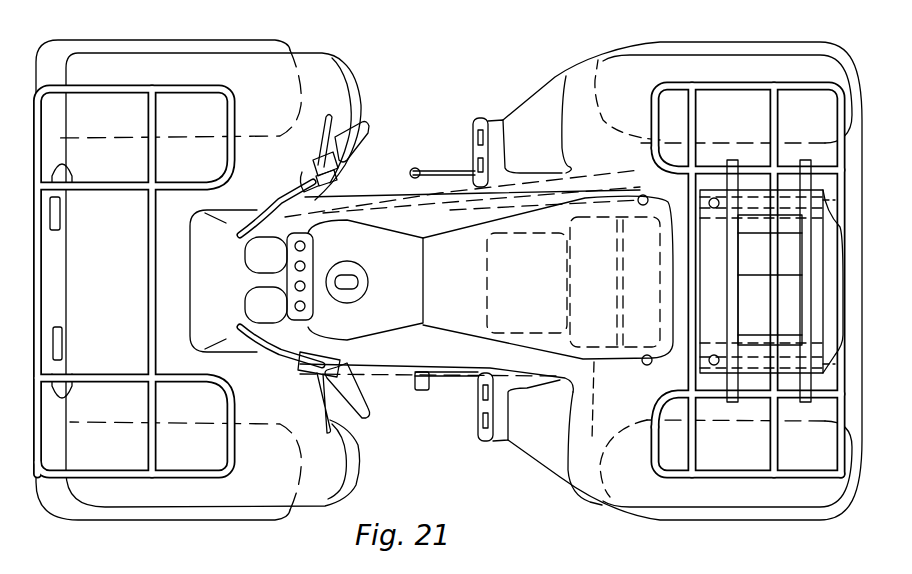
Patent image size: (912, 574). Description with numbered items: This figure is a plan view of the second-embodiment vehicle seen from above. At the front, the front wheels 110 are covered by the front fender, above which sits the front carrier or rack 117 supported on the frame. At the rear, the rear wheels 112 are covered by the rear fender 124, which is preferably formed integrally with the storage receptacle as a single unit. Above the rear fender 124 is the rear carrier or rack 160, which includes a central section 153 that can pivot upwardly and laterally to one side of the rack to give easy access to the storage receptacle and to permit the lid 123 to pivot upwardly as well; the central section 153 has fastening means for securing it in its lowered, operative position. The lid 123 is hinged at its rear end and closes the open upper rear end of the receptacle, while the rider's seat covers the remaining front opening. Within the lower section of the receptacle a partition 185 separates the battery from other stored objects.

The front wheels 110 is at (203, 40).
The front carrier or rack 117 is at (32, 133).
The rear fender 124 is at (600, 60).
The rear wheels 112 is at (728, 46).
The rear carrier or rack 160 is at (843, 80).
The lid 123 is at (713, 253).
The central section 153 is at (818, 347).
The partition 185 is at (592, 440).